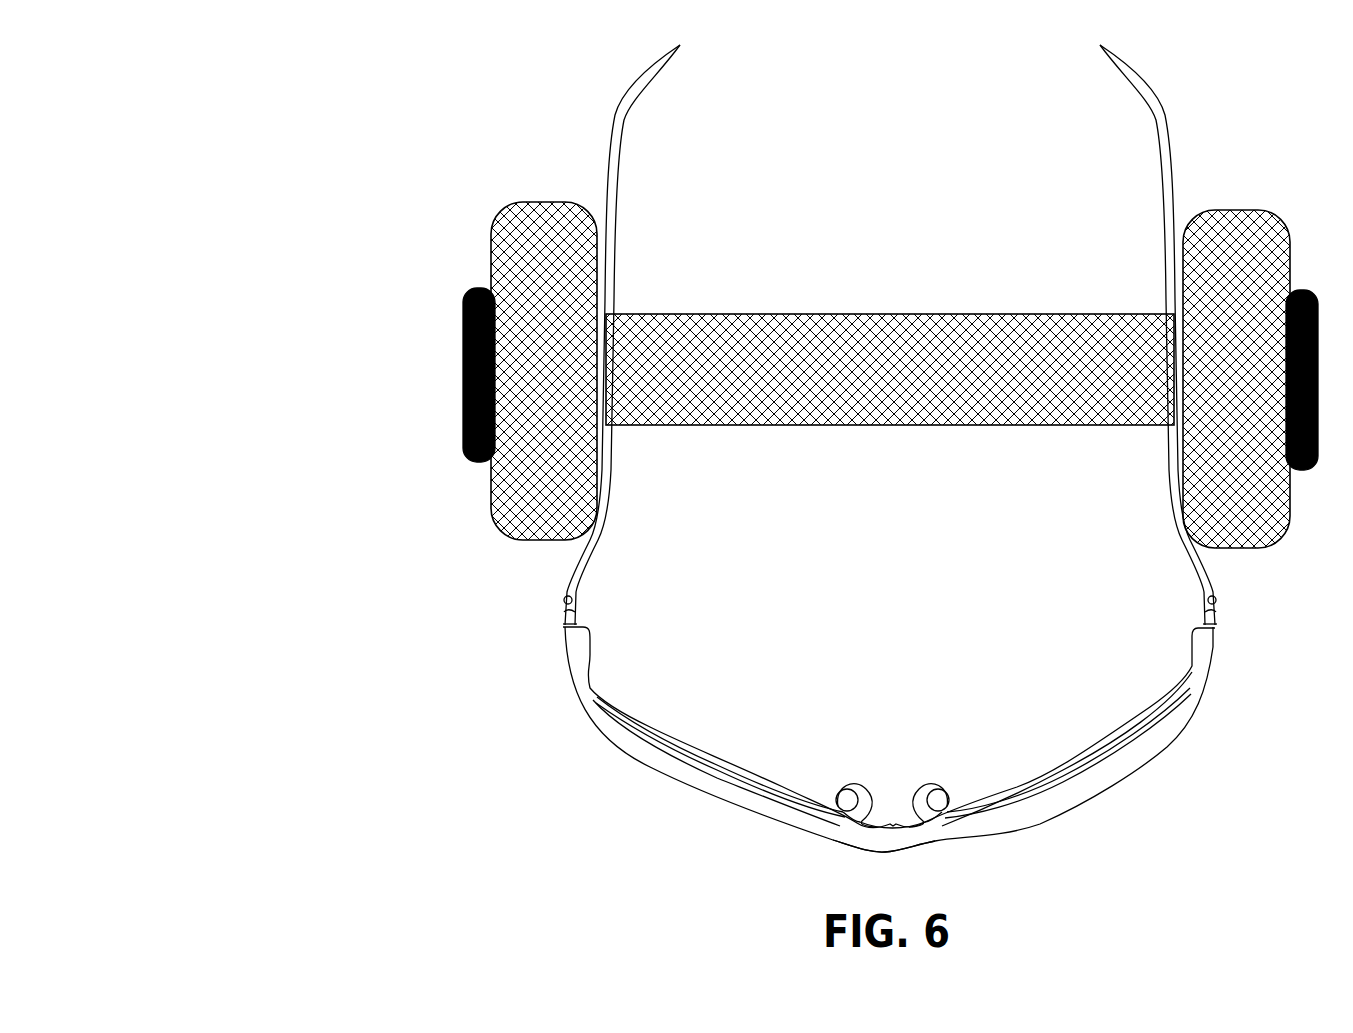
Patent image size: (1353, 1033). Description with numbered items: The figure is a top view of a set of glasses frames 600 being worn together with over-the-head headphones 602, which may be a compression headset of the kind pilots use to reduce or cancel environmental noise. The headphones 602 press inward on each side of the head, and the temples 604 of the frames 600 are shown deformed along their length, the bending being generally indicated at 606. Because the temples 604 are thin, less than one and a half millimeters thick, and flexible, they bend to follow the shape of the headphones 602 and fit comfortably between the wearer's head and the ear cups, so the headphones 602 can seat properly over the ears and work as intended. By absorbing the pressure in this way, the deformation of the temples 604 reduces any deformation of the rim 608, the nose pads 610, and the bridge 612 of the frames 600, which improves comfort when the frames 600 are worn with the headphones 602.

The glasses frames 600 is at (285, 89).
The over-the-head headphones 602 is at (520, 200).
The temples 604 is at (621, 94).
The deformation along the temples 606 is at (623, 261).
The rim 608 is at (585, 708).
The nose pads 610 is at (846, 789).
The bridge 612 is at (882, 853).